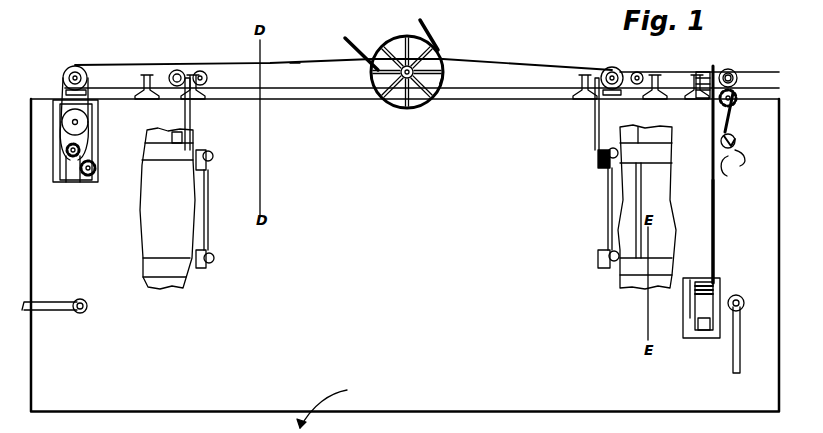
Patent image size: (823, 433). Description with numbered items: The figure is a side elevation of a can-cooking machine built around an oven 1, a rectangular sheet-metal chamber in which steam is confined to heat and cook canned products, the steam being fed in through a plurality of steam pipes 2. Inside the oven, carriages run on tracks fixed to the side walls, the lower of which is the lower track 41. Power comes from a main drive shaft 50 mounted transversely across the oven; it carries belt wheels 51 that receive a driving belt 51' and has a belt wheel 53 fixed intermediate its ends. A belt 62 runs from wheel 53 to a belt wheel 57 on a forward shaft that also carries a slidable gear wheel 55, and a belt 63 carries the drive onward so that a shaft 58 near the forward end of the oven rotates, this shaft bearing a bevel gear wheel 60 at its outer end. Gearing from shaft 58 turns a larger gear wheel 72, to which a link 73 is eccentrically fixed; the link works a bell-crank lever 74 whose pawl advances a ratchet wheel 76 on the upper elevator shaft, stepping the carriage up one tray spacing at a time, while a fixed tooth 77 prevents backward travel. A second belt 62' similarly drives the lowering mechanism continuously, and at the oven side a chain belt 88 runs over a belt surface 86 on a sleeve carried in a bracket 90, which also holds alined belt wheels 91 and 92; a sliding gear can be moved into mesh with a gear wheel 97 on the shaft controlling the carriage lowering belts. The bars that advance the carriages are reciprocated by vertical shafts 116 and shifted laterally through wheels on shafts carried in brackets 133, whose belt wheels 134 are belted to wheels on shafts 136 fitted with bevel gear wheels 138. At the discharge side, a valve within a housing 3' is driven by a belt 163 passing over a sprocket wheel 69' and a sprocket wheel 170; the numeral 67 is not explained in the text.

The oven 1 is at (487, 132).
The steam pipes 2 is at (40, 307).
The housing 3' is at (685, 308).
The lower track 41 is at (640, 268).
The main drive shaft 50 is at (445, 50).
The belt wheels 51 is at (368, 40).
The driving belt 51' is at (446, 28).
The belt wheel 53 is at (446, 76).
The gear wheel 55 is at (612, 68).
The belt wheel 57 is at (619, 72).
The shaft 58 is at (742, 92).
The bevel gear wheel 60 is at (736, 78).
The belt 62 is at (343, 41).
The belt 62' is at (296, 50).
The belt 63 is at (700, 72).
The support 67 is at (719, 432).
The sprocket wheel 69' is at (724, 282).
The gear wheel 72 is at (740, 100).
The link 73 is at (734, 118).
The bell-crank lever 74 is at (722, 140).
The ratchet wheel 76 is at (739, 157).
The fixed tooth 77 is at (732, 165).
The belt surface 86 is at (78, 67).
The chain belt 88 is at (61, 93).
The bracket 90 is at (75, 170).
The belt wheel 91 is at (82, 125).
The belt wheel 92 is at (82, 152).
The gear wheel 97 is at (96, 172).
The vertical shafts 116 is at (174, 141).
The brackets 133 is at (210, 173).
The belt wheels 134 is at (600, 165).
The shafts 136 is at (157, 80).
The bevel gear wheels 138 is at (176, 74).
The belt 163 is at (712, 245).
The sprocket wheel 170 is at (715, 68).